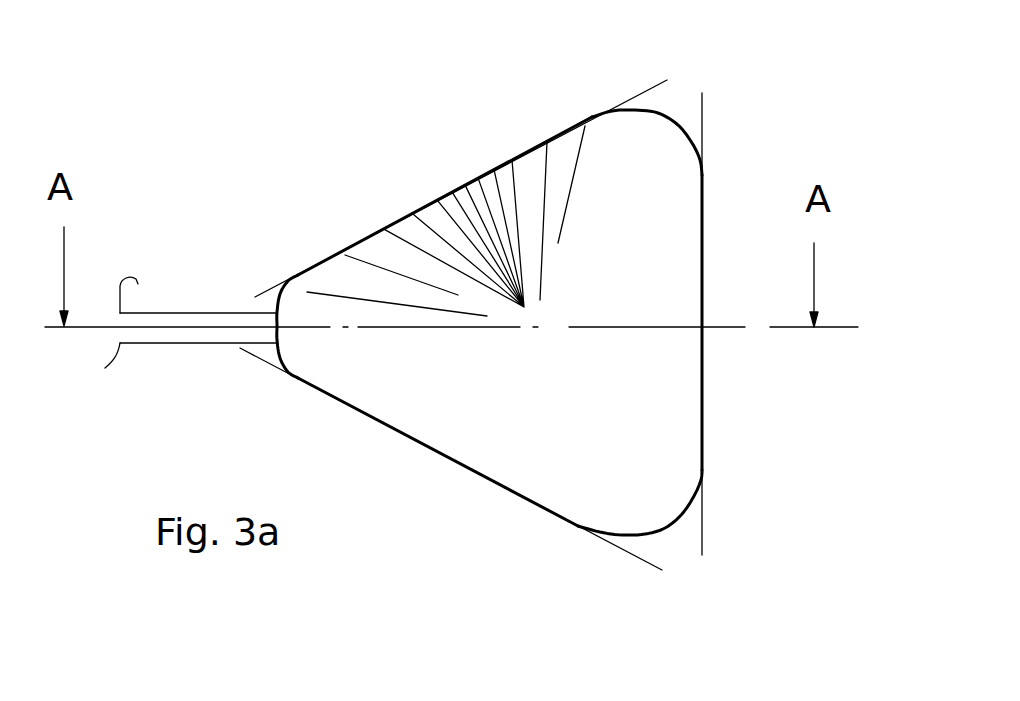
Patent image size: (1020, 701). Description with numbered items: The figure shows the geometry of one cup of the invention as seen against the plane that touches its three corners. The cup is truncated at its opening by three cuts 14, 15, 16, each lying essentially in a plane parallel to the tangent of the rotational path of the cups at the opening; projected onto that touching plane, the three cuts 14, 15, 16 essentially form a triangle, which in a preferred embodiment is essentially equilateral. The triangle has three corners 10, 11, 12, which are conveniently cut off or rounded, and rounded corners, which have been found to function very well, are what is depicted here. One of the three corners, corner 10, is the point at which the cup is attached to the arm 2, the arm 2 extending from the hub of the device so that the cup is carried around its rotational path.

The arm 2 is at (165, 313).
The corner 10 is at (278, 353).
The corner 11 is at (665, 117).
The corner 12 is at (667, 530).
The cut 14 is at (452, 460).
The cut 15 is at (483, 173).
The cut 16 is at (702, 383).